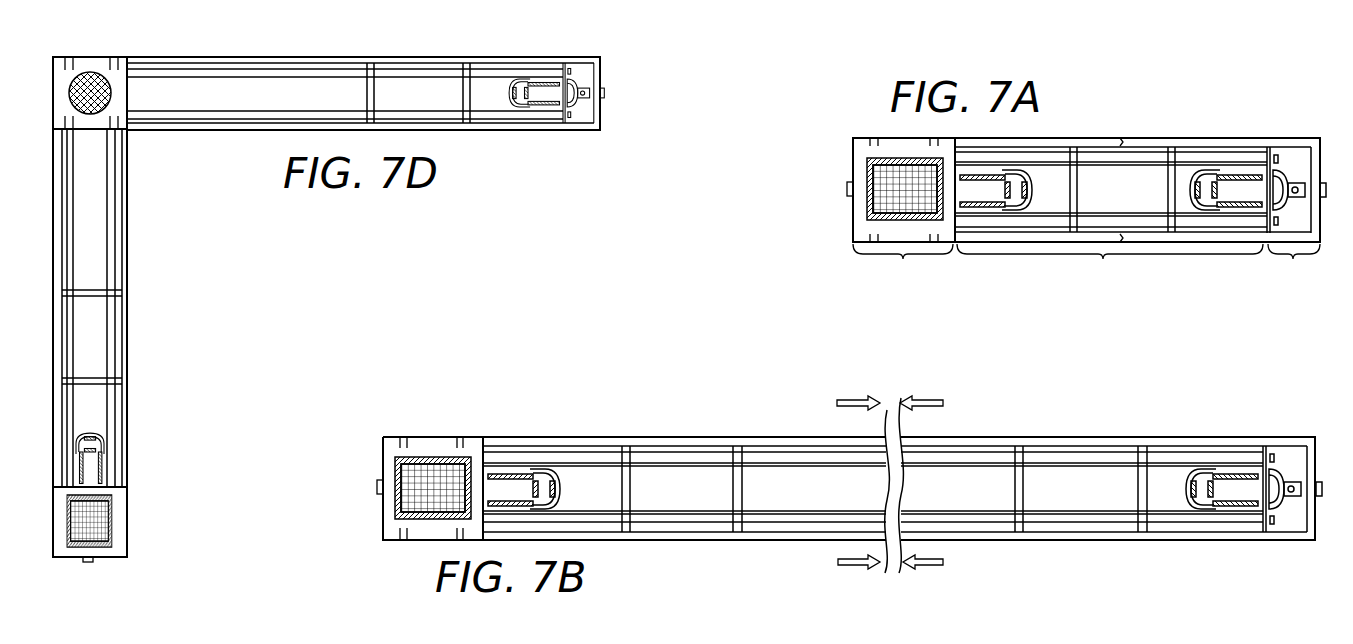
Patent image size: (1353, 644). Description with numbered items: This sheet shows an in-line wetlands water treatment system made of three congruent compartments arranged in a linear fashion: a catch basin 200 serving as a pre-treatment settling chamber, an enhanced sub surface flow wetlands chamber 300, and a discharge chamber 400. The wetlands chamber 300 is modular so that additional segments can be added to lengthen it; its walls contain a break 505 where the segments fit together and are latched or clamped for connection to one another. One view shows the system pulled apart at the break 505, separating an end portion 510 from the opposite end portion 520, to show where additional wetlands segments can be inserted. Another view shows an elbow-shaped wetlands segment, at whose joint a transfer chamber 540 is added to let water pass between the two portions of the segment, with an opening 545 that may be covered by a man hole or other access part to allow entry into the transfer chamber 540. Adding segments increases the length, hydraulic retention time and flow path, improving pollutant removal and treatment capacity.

In FIG. 7A, the catch basin/pre-treatment settling chamber 200 is at (901, 215).
In FIG. 7A, the enhanced sub surface flow wetlands chamber 300 is at (1133, 219).
In FIG. 7A, the discharge chamber 400 is at (1296, 219).
In FIG. 7A, the break 505 is at (1122, 138).
In FIG. 7B, the break 505 is at (890, 410).
In FIG. 7B, the first end section 510 is at (538, 437).
In FIG. 7B, the second end section 520 is at (1180, 437).
In FIG. 7D, the transfer chamber 540 is at (128, 142).
In FIG. 7D, the circular port 545 is at (89, 75).